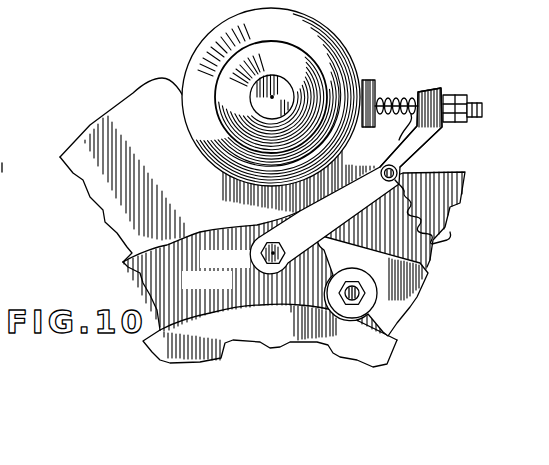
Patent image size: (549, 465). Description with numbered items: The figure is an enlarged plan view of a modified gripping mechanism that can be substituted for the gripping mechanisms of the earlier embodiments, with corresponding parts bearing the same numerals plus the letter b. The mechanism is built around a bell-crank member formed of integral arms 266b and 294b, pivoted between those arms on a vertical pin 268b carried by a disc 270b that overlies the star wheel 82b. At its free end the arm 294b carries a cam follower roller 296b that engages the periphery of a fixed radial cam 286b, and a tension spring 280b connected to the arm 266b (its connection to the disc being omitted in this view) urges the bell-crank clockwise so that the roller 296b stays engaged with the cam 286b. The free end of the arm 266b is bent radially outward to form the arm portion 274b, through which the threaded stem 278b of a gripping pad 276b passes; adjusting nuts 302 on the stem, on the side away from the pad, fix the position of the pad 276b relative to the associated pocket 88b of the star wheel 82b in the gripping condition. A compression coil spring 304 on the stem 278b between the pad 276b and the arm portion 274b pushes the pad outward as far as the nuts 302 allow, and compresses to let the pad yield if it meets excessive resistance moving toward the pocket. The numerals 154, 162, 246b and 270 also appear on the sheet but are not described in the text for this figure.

The star wheel 82b is at (132, 98).
The pocket 88b is at (190, 70).
The lever 154 is at (357, 0).
The link 162 is at (426, 0).
The adjusting mechanism 246b is at (442, 65).
The gripping pad 276b is at (378, 84).
The adjusting nuts 302 is at (452, 97).
The threaded stem 278b is at (481, 105).
The compression coil spring 304 is at (399, 140).
The arm portion 274b is at (433, 137).
The tension spring 280b is at (440, 213).
The arm 266b is at (350, 216).
The vertical pin 268b is at (254, 256).
The arm 294b is at (288, 279).
The disc 270b is at (397, 302).
The cam follower roller 296b is at (395, 338).
The fixed radial cam 286b is at (378, 360).
The cam link 270 is at (15, 241).